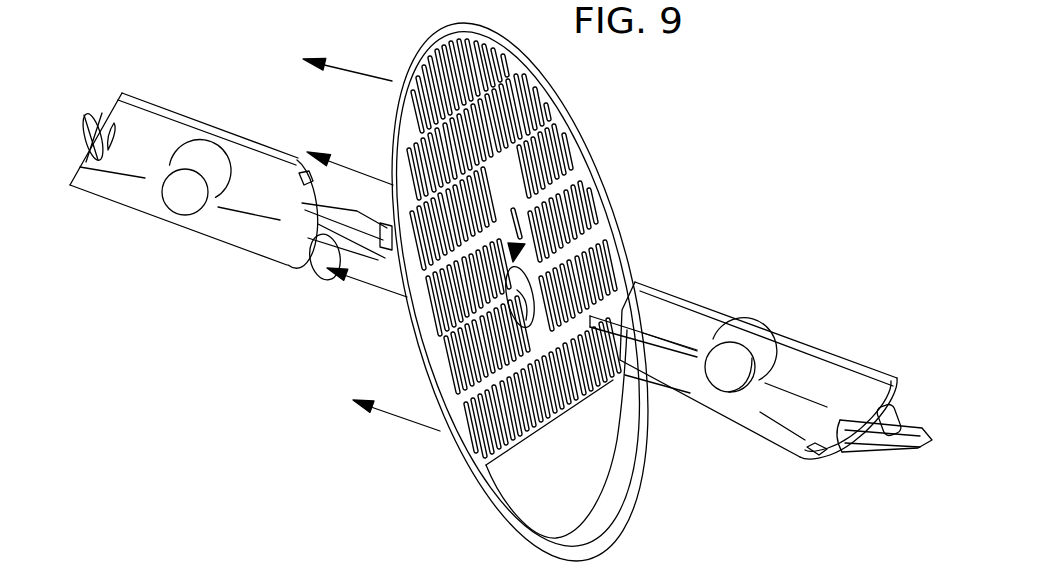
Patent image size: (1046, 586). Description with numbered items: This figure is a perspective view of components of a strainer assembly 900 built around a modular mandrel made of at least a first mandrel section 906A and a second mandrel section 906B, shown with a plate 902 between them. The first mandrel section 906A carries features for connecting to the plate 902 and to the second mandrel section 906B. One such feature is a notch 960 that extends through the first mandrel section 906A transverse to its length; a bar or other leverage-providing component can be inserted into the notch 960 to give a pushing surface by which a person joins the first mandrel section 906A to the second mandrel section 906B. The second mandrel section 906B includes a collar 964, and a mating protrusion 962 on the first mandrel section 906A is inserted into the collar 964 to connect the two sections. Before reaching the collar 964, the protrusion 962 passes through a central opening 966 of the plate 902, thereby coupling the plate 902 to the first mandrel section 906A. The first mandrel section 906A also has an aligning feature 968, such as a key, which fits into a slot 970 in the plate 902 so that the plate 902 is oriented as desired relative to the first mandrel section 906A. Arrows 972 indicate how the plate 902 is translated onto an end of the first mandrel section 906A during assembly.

The strainer assembly 900 is at (735, 136).
The plate 902 is at (612, 228).
The first mandrel section 906A is at (231, 187).
The second mandrel section 906B is at (761, 361).
The notch 960 is at (178, 204).
The mating protrusion 962 is at (333, 228).
The collar 964 is at (640, 335).
The central opening 966 is at (516, 297).
The aligning feature 968 is at (297, 178).
The slot 970 is at (515, 249).
The arrows 972 is at (341, 68).